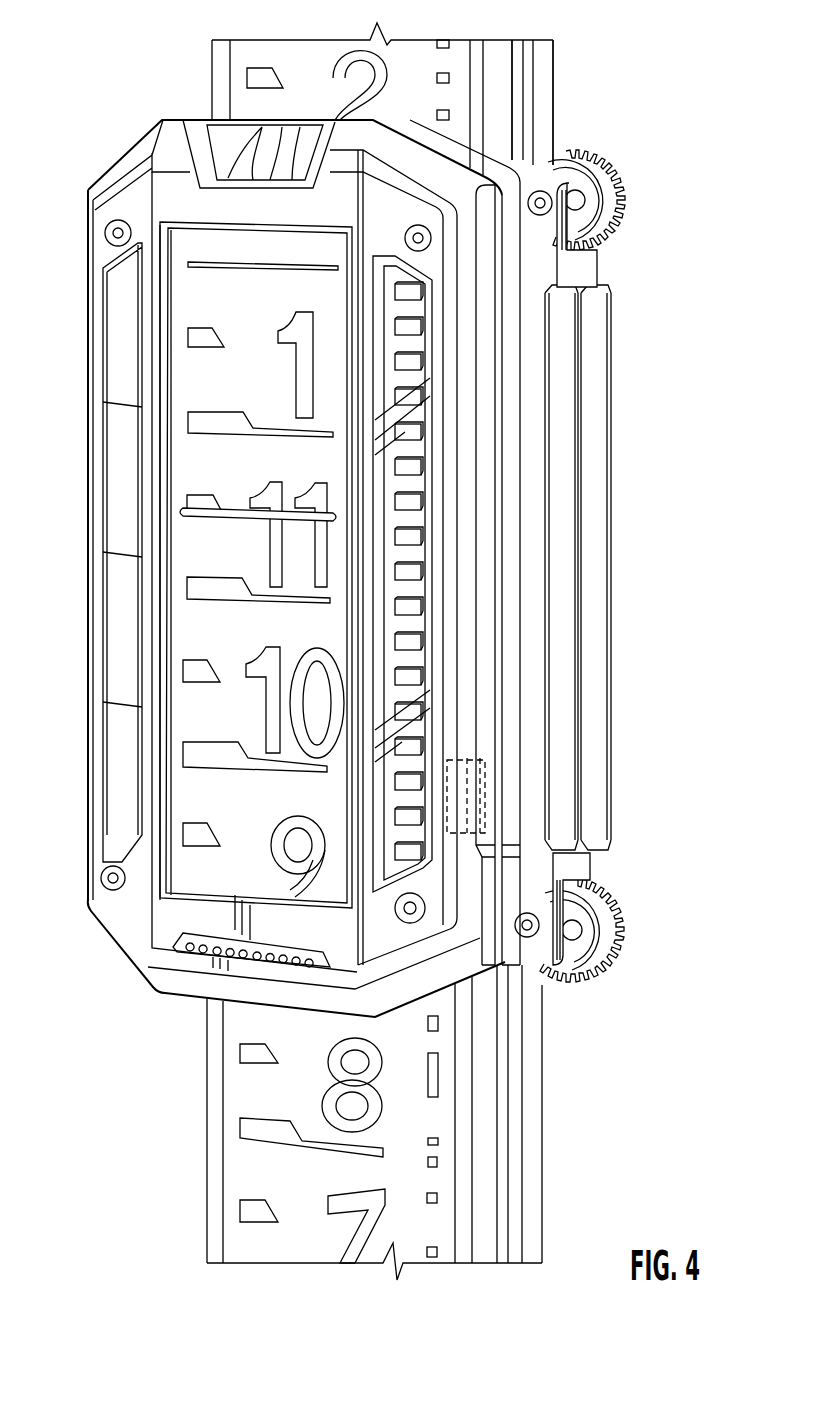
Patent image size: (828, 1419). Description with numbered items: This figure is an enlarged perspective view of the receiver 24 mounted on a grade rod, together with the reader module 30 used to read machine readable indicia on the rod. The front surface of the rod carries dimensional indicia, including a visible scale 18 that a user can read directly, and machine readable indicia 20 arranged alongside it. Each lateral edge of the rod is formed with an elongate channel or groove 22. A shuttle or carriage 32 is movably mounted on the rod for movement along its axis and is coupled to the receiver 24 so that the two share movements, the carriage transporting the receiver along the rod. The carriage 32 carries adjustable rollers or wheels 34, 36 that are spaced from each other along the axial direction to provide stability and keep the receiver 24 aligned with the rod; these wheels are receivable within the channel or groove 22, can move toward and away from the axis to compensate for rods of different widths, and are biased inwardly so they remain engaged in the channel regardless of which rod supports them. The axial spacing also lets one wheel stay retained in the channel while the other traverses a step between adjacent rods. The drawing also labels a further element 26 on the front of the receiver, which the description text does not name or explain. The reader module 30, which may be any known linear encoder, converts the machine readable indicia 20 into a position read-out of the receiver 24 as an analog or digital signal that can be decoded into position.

The visible scale 18 is at (343, 1105).
The machine readable indicia 20 is at (437, 1080).
The elongate channel or groove 22 is at (525, 97).
The receiver 24 is at (88, 627).
The indicator lights 26 is at (408, 538).
The reader module 30 is at (483, 800).
The shuttle or carriage 32 is at (592, 572).
The roller or wheel 34 is at (620, 183).
The roller or wheel 36 is at (600, 965).